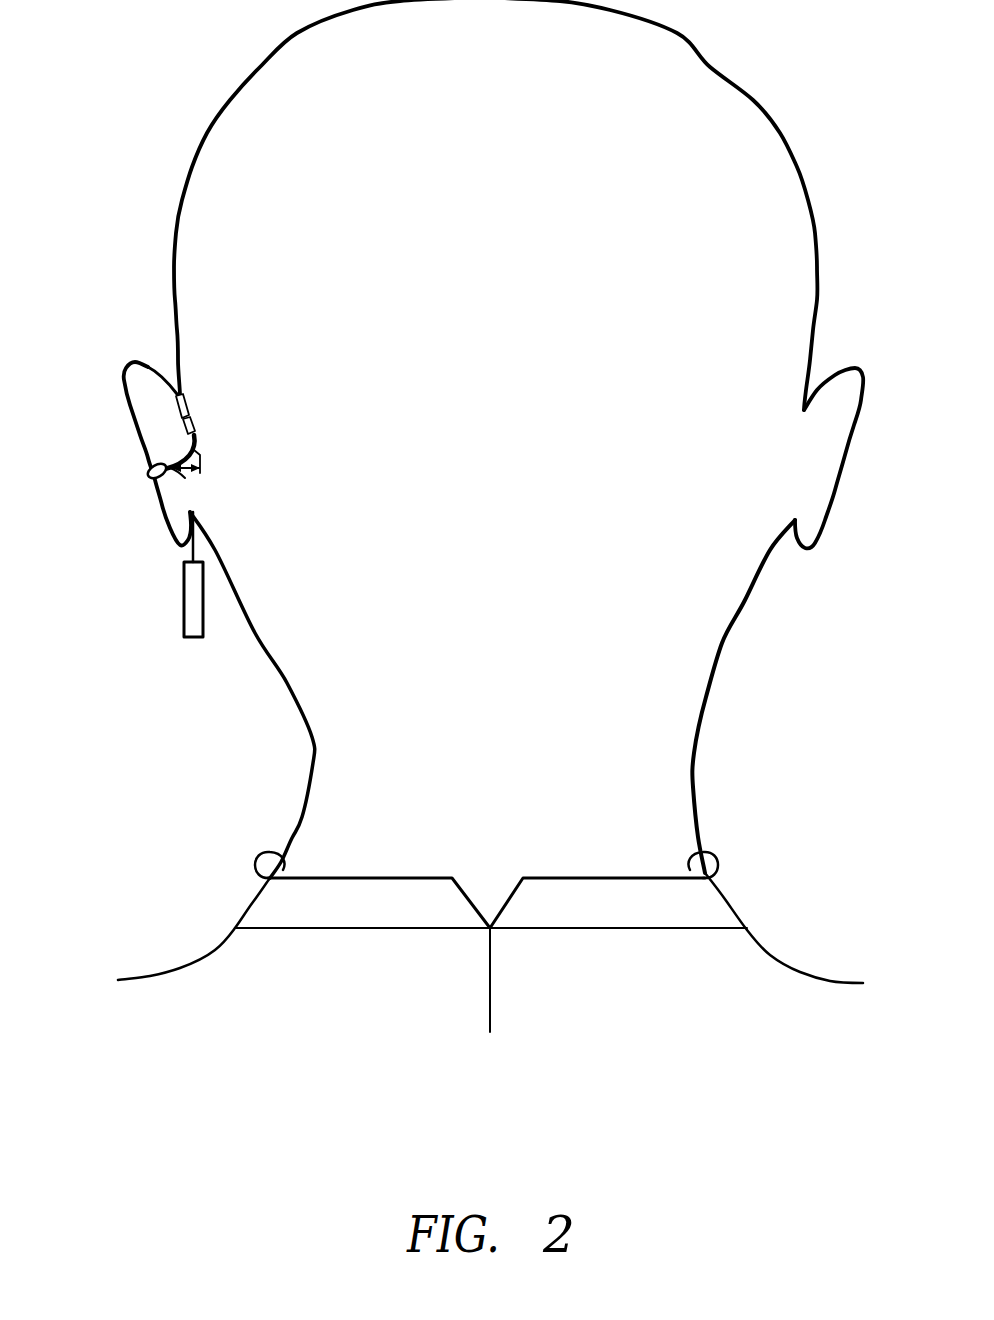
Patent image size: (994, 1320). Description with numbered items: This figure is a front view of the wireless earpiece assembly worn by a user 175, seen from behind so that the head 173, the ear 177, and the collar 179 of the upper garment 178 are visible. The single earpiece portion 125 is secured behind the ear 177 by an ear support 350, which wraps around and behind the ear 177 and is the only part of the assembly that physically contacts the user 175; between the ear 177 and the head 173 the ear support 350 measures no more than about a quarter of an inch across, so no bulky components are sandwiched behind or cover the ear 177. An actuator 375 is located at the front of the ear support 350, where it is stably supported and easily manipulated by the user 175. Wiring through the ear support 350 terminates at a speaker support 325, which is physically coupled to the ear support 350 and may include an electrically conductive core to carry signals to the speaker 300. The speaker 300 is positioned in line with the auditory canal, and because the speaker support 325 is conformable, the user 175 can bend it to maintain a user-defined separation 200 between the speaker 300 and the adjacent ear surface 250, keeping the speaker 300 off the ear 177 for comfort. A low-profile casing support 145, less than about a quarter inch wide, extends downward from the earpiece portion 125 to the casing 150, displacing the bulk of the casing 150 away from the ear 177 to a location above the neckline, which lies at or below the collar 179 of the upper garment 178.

The earpiece portion 125 is at (164, 398).
The casing support 145 is at (195, 527).
The casing 150 is at (150, 590).
The head 173 is at (175, 255).
The user 175 is at (452, 205).
The ear 177 is at (145, 408).
The upper garment 178 is at (490, 938).
The collar 179 is at (257, 902).
The separation 200 is at (184, 478).
The ear surface 250 is at (233, 467).
The speaker 300 is at (152, 480).
The speaker support 325 is at (197, 443).
The ear support 350 is at (180, 393).
The actuator 375 is at (193, 422).